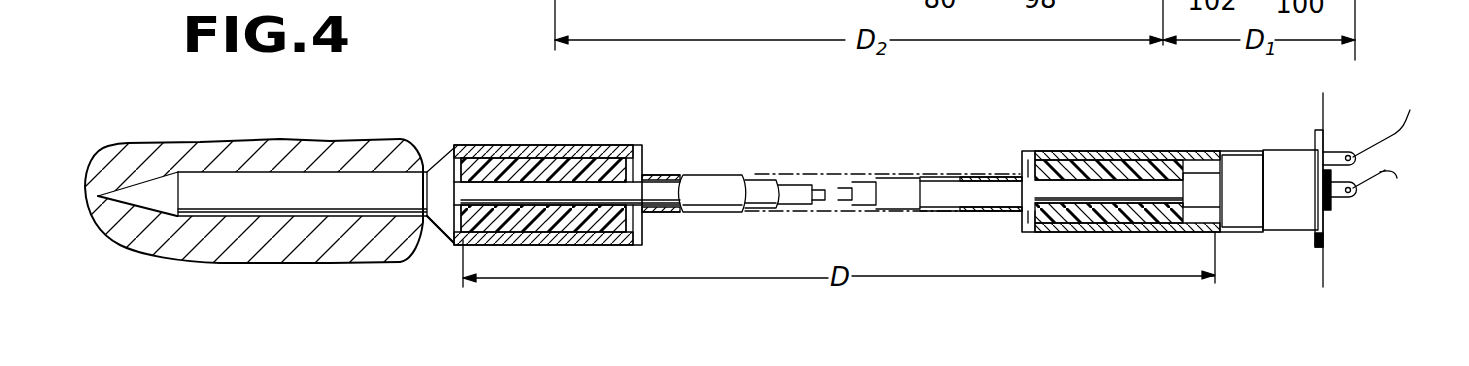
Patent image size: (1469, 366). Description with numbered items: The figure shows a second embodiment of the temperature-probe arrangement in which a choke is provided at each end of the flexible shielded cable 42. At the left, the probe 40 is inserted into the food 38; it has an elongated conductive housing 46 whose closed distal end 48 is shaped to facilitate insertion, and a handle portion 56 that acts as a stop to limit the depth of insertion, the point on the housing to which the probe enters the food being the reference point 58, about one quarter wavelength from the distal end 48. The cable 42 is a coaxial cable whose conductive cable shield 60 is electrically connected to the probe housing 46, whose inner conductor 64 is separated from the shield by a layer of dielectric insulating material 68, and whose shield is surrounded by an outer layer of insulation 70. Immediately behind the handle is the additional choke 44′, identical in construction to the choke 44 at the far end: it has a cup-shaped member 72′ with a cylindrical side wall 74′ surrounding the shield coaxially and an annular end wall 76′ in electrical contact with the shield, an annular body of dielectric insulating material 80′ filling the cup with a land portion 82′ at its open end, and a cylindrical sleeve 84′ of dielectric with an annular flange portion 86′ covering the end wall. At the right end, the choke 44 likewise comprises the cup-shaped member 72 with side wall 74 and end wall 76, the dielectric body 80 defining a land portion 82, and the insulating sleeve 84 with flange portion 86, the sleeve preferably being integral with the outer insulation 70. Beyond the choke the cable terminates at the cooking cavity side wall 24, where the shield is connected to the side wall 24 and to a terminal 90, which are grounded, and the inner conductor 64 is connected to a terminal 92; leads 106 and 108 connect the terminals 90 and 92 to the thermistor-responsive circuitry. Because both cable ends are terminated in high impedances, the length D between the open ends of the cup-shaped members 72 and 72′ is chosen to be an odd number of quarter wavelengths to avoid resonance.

The cooking cavity side wall 24 is at (1323, 112).
The food 38 is at (192, 152).
The probe 40 is at (277, 130).
The flexible shielded cable 42 is at (803, 172).
The choke 44 is at (1131, 143).
The additional choke 44′ is at (568, 140).
The elongated conductive housing 46 is at (347, 185).
The distal end 48 is at (122, 160).
The handle portion 56 is at (443, 160).
The reference point 58 is at (423, 226).
The cable shield 60 is at (762, 183).
The inner conductor 64 is at (822, 196).
The dielectric insulating material 68 is at (797, 205).
The layer of insulation 70 is at (715, 180).
The cup-shaped member 72 is at (1053, 158).
The cup-shaped member 72′ is at (618, 153).
The cylindrical side wall 74 is at (1157, 160).
The cylindrical side wall 74′ is at (588, 150).
The annular end wall 76 is at (1027, 170).
The annular end wall 76′ is at (642, 156).
The annular body of dielectric insulating material 80 is at (1087, 210).
The annular body of dielectric insulating material 80′ is at (550, 222).
The land portion 82 is at (1220, 157).
The land portion 82′ is at (457, 157).
The cylindrical sleeve 84 is at (1195, 152).
The cylindrical sleeve 84′ is at (505, 147).
The annular flange portion 86 is at (1027, 220).
The annular flange portion 86′ is at (645, 233).
The terminal 90 is at (1337, 150).
The terminal 92 is at (1337, 199).
The lead 106 is at (1395, 120).
The lead 108 is at (1394, 189).